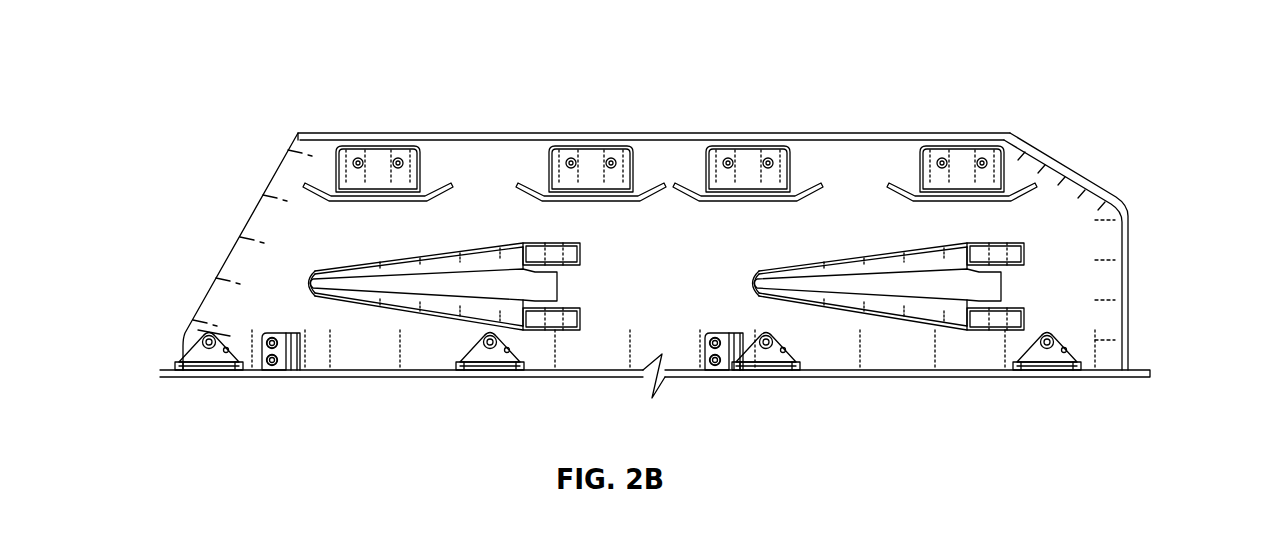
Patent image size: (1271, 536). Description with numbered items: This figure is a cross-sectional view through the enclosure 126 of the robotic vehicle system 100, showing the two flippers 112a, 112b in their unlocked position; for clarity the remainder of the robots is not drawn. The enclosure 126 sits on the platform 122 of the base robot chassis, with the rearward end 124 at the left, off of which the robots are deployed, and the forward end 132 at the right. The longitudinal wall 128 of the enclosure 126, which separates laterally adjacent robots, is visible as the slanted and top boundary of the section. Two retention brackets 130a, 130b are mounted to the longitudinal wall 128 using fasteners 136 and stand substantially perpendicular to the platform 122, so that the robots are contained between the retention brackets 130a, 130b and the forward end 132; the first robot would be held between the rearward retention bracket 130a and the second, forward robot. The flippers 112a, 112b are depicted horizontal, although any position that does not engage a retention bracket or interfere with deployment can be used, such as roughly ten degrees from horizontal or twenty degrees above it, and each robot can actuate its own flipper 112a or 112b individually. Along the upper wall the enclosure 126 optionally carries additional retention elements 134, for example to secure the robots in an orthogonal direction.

The robotic vehicle system 100 is at (250, 134).
The flipper 112a is at (553, 293).
The flipper 112b is at (995, 293).
The platform 122 is at (1093, 378).
The rearward end 124 is at (172, 365).
The enclosure 126 is at (897, 372).
The longitudinal wall 128 is at (268, 230).
The rearward retention bracket 130a is at (283, 355).
The retention bracket 130b is at (728, 358).
The forward end 132 is at (1132, 305).
The retention elements 134 is at (380, 152).
The fasteners 136 is at (290, 333).